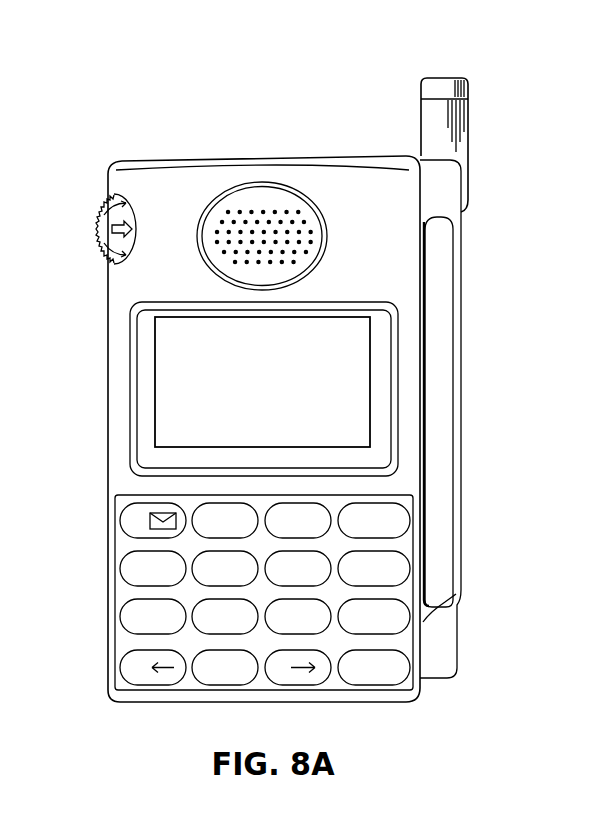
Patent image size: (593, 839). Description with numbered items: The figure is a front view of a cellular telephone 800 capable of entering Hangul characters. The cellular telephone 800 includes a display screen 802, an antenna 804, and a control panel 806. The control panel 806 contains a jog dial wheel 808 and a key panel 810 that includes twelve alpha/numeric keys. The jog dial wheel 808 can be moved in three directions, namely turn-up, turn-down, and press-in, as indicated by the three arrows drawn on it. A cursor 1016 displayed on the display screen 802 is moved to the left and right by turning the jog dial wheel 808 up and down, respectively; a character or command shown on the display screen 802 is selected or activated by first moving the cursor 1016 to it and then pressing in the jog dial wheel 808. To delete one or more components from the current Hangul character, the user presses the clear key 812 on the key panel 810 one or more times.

The cellular telephone 800 is at (165, 102).
The display screen 802 is at (155, 366).
The antenna 804 is at (470, 117).
The control panel 806 is at (152, 277).
The jog dial wheel 808 is at (96, 243).
The key panel 810 is at (415, 507).
The clear key 812 is at (403, 568).
The cursor 1016 is at (190, 376).